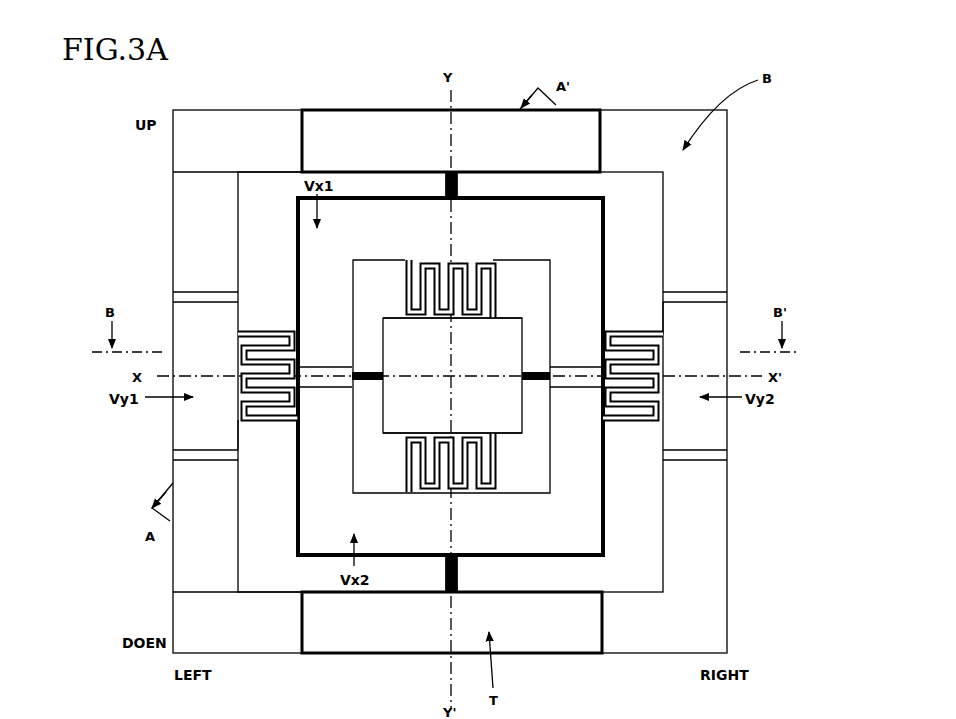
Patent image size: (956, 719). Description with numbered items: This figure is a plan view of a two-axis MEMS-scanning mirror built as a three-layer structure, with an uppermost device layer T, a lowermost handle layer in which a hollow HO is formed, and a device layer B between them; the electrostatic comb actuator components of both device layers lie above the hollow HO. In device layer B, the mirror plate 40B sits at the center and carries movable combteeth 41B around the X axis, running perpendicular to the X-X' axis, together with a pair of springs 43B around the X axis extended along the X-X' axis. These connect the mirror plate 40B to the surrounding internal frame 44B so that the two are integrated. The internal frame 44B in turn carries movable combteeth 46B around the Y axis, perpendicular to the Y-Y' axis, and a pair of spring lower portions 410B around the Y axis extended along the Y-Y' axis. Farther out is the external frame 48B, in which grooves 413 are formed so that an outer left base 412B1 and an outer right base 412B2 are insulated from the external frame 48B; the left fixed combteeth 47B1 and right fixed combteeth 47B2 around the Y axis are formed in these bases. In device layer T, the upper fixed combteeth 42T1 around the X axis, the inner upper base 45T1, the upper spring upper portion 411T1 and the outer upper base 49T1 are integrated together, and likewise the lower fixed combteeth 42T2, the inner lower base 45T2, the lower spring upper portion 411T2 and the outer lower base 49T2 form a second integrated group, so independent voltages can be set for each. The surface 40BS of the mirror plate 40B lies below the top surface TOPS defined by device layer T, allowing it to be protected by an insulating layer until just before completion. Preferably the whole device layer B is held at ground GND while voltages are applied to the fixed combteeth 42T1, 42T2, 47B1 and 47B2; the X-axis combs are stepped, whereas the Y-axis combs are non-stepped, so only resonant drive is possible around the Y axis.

The external frame 48B is at (245, 151).
The outer upper base 49T1 is at (575, 151).
The outer lower base 49T2 is at (575, 636).
The ground GND is at (680, 592).
The grooves 413 is at (218, 298).
The outer left base 412B1 is at (237, 437).
The outer right base 412B2 is at (668, 325).
The top surface TOPS is at (577, 243).
The spring lower portions around the Y axis 410B is at (369, 395).
The upper spring upper portion around the Y axis 411T1 is at (448, 180).
The lower spring upper portion around the Y axis 411T2 is at (448, 578).
The inner upper base 45T1 is at (575, 236).
The inner lower base 45T2 is at (575, 538).
The hollow HO is at (388, 293).
The mirror plate 40B is at (437, 394).
The surface of the mirror plate 40BS is at (507, 327).
The movable combteeth around the X axis 41B is at (450, 262).
The movable combteeth around the Y axis 46B is at (237, 375).
The internal frame 44B is at (333, 365).
The springs around the X axis 43B is at (370, 385).
The left fixed combteeth around the Y axis 47B1 is at (308, 390).
The right fixed combteeth around the Y axis 47B2 is at (580, 365).
The upper fixed combteeth around the X axis 42T1 is at (450, 318).
The lower fixed combteeth around the X axis 42T2 is at (453, 432).